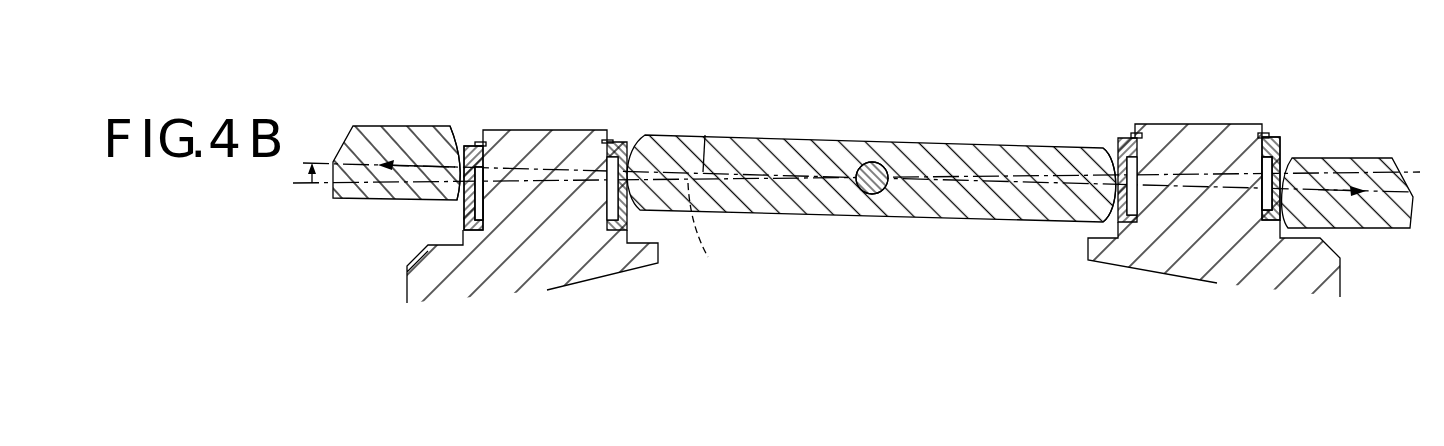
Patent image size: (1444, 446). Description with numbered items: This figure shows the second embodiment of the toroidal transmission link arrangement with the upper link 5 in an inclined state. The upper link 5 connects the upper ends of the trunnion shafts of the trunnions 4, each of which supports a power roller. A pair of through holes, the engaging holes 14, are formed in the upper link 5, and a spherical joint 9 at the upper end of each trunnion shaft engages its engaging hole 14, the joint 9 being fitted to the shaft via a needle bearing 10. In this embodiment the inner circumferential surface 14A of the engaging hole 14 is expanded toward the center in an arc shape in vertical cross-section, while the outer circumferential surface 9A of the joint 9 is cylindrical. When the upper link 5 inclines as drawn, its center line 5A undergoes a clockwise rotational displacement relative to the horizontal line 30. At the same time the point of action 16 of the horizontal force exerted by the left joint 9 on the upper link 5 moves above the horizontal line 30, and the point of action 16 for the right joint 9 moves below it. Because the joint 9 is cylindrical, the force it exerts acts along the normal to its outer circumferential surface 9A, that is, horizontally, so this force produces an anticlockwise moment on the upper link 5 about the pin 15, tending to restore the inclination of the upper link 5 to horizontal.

The trunnion 4 is at (568, 130).
The upper link 5 is at (903, 142).
The center line 5A is at (705, 135).
The spherical joint 9 is at (468, 226).
The outer circumferential surface 9A is at (466, 232).
The needle bearing 10 is at (479, 212).
The engaging hole 14 is at (457, 200).
The inner circumferential surface 14A is at (464, 150).
The pin 15 is at (866, 194).
The point of action 16 is at (457, 157).
The horizontal line 30 is at (716, 235).